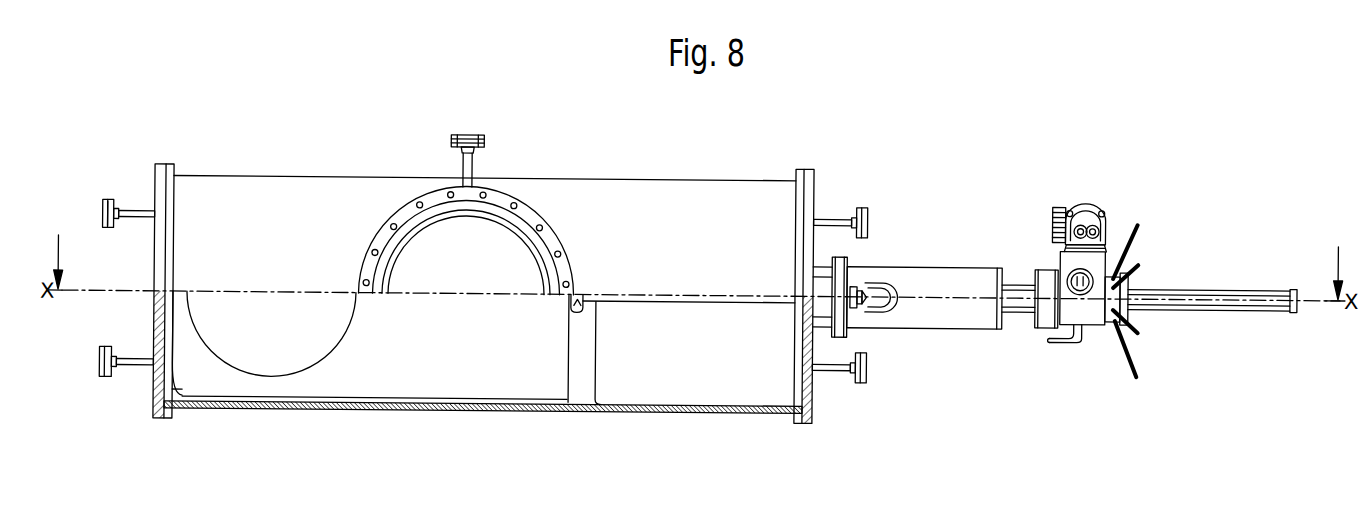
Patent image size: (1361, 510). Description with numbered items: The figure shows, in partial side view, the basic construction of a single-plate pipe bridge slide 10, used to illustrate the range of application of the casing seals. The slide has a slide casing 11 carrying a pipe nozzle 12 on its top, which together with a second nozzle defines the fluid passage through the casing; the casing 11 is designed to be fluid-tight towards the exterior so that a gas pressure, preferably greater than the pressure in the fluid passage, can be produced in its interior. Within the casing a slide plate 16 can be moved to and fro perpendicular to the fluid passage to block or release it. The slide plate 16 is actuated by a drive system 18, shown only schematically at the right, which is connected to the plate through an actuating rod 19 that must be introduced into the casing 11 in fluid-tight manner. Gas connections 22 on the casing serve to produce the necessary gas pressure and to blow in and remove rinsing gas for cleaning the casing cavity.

The single-plate pipe bridge slide 10 is at (246, 157).
The slide casing 11 is at (336, 191).
The pipe nozzle 12 is at (397, 250).
The slide plate 16 is at (481, 264).
The drive system 18 is at (1110, 188).
The actuating rod 19 is at (876, 289).
The gas connections 22 is at (129, 211).